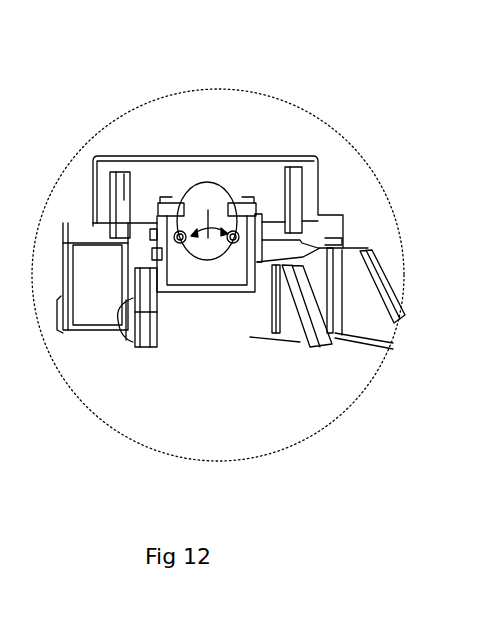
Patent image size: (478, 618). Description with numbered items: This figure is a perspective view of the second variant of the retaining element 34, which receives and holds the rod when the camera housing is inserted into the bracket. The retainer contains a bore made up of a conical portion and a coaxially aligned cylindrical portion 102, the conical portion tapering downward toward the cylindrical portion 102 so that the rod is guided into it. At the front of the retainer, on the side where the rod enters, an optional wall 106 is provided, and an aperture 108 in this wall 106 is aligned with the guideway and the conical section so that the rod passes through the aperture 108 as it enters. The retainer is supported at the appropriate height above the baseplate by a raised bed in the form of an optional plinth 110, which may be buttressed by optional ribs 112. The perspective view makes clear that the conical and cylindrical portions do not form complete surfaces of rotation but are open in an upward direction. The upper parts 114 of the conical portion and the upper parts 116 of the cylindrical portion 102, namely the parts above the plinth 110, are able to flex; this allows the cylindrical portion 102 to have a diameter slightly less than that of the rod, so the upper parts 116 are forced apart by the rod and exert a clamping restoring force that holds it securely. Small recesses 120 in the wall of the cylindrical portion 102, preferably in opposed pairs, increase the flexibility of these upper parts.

The retaining element 34 is at (195, 96).
The cylindrical portion 102 is at (210, 240).
The wall 106 is at (308, 181).
The aperture 108 is at (208, 211).
The plinth 110 is at (113, 277).
The ribs 112 is at (367, 262).
The upper parts of the conical portion 114 is at (173, 203).
The upper parts of the cylindrical portion 116 is at (182, 222).
The recesses in the cylindrical portion 120 is at (208, 238).